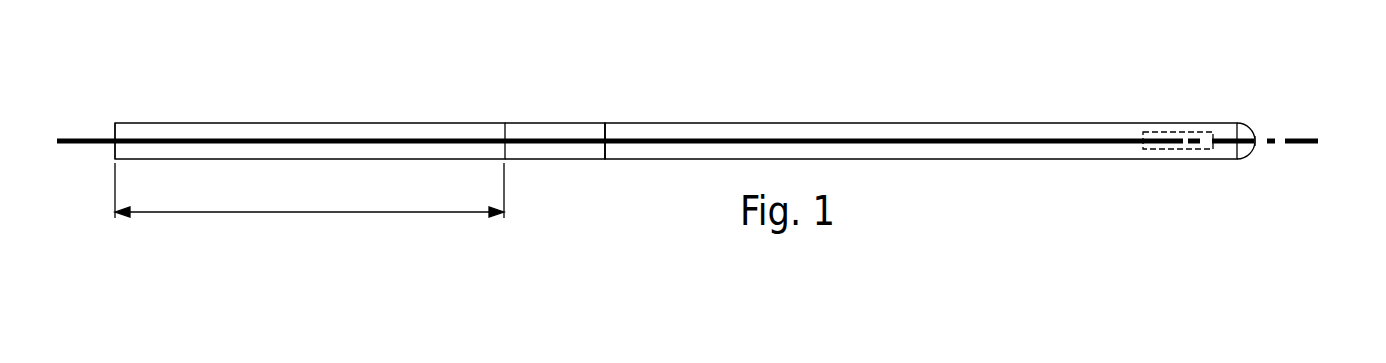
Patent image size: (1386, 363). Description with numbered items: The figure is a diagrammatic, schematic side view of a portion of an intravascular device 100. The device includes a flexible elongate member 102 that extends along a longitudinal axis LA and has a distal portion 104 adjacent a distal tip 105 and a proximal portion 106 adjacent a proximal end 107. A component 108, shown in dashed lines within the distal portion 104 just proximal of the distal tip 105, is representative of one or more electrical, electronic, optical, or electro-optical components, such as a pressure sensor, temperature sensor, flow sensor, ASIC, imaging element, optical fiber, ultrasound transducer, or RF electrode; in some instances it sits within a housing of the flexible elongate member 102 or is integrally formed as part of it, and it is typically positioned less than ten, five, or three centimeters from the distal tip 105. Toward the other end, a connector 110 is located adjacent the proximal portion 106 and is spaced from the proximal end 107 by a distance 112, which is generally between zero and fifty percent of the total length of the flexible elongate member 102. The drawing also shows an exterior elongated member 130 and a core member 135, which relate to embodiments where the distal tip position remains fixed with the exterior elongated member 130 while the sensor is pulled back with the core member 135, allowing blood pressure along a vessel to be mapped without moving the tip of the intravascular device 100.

The intravascular device 100 is at (446, 58).
The flexible elongate member 102 is at (882, 123).
The distal portion 104 is at (1190, 123).
The distal tip 105 is at (1255, 135).
The proximal portion 106 is at (317, 123).
The proximal end 107 is at (115, 130).
The component 108 is at (1185, 150).
The connector 110 is at (558, 159).
The distance 112 is at (310, 212).
The exterior elongated member 130 is at (682, 123).
The core member 135 is at (645, 138).
The longitudinal axis LA is at (1303, 140).